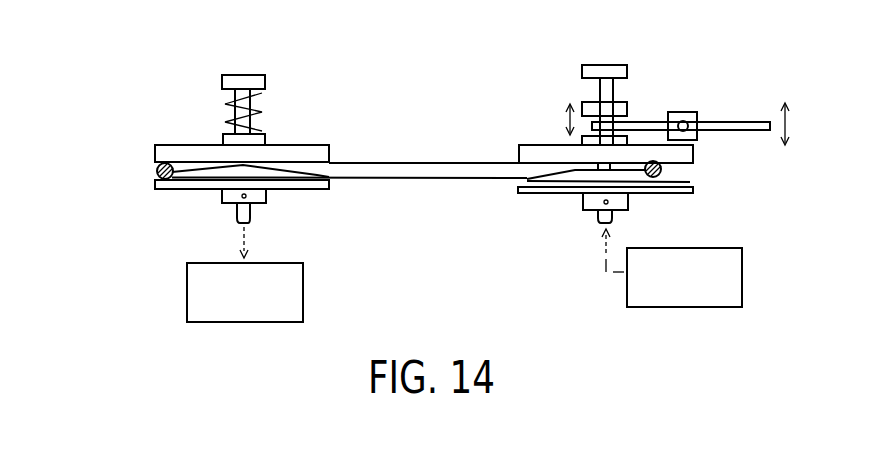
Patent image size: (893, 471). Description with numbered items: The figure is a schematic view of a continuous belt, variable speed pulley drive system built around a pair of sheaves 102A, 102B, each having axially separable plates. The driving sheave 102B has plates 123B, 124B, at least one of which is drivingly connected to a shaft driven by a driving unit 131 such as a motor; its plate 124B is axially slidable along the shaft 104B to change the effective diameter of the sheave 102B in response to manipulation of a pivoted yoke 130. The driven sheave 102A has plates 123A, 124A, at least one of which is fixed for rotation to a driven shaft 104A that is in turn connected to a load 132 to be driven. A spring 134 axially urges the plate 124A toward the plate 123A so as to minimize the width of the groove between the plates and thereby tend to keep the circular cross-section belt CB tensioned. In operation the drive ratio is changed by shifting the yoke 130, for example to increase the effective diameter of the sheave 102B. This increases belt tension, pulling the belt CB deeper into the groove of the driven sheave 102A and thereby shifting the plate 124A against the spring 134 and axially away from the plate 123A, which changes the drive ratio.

The sheave 102A is at (245, 155).
The sheave 102B is at (628, 156).
The driven shaft 104A is at (237, 212).
The shaft 104B is at (605, 92).
The plate 123A is at (285, 183).
The plate 123B is at (543, 190).
The plate 124A is at (282, 152).
The plate 124B is at (555, 150).
The yoke 130 is at (725, 122).
The driving unit 131 is at (718, 297).
The load 132 is at (218, 322).
The spring 134 is at (225, 104).
The belt CB is at (157, 171).